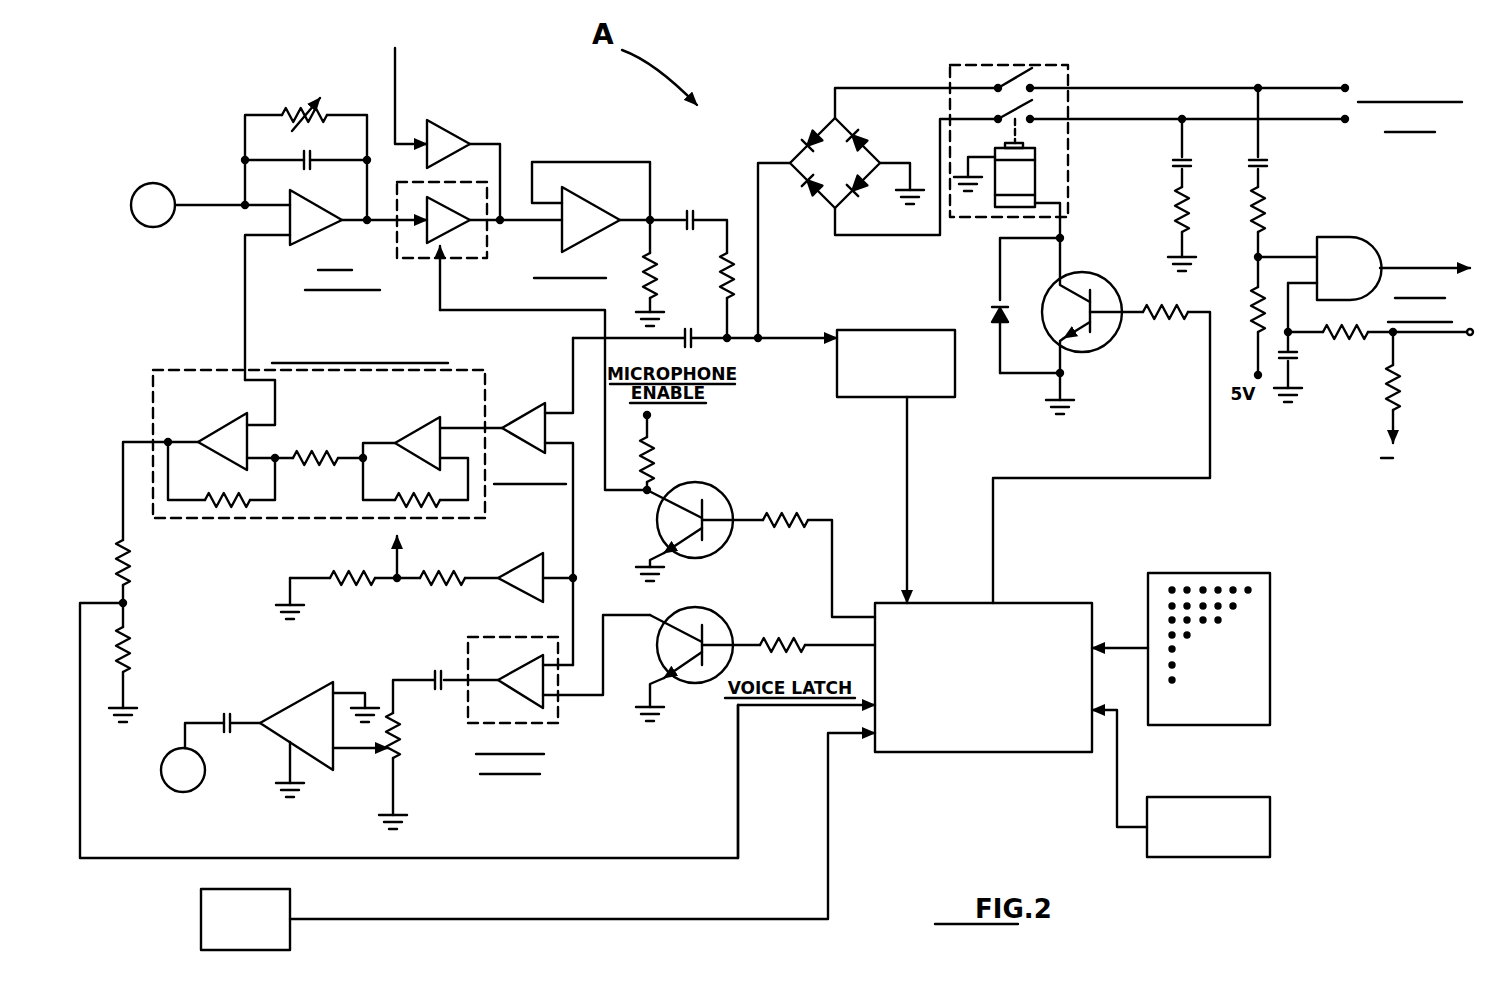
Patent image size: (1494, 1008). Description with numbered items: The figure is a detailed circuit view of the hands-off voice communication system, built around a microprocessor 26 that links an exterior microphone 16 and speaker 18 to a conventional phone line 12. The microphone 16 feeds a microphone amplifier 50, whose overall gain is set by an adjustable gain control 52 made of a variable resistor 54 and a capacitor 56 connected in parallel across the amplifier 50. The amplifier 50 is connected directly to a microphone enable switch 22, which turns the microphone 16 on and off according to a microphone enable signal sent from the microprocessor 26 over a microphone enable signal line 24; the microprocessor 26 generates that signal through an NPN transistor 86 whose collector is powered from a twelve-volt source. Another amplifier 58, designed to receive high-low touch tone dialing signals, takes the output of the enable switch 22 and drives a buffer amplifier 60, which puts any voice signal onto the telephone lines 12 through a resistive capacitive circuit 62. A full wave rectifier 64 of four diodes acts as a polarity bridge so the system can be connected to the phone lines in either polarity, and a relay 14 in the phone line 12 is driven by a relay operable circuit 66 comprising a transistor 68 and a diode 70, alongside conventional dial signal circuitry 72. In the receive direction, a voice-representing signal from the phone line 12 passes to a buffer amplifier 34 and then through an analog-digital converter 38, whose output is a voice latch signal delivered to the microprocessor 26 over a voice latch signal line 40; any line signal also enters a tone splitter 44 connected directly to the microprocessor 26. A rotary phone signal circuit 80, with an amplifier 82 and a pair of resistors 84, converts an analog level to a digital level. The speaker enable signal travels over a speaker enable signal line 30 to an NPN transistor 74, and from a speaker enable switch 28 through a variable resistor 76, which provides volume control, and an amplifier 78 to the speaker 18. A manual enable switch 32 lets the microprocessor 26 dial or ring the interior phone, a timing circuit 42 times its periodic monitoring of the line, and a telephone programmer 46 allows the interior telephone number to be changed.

The phone line 12 is at (1150, 118).
The relay 14 is at (1040, 62).
The microphone 16 is at (150, 196).
The speaker 18 is at (192, 775).
The microphone enable switch 22 is at (466, 254).
The microphone enable signal line 24 is at (521, 312).
The microprocessor 26 is at (1034, 612).
The speaker enable switch 28 is at (562, 712).
The speaker enable signal line 30 is at (830, 640).
The enable switch 32 is at (292, 892).
The buffer amplifier 34 is at (533, 415).
The analog-digital converter 38 is at (283, 512).
The voice latch signal line 40 is at (525, 858).
The timing circuit 42 is at (1222, 857).
The tone splitter 44 is at (955, 393).
The telephone programmer 46 is at (1258, 660).
The microphone amplifier 50 is at (304, 240).
The adjustable gain control 52 is at (318, 84).
The variable resistor 54 is at (300, 106).
The capacitor 56 is at (313, 157).
The amplifier 58 is at (451, 124).
The buffer amplifier 60 is at (596, 207).
The resistive capacitive circuit 62 is at (697, 211).
The full wave rectifier 64 is at (828, 114).
The relay operable circuit 66 is at (1108, 270).
The transistor 68 is at (1106, 331).
The diode 70 is at (990, 312).
The dial signal circuitry 72 is at (1354, 228).
The NPN transistor 74 is at (690, 617).
The variable resistor 76 is at (402, 749).
The amplifier 78 is at (312, 699).
The rotary phone signal circuit 80 is at (470, 564).
The amplifier 82 is at (522, 581).
The resistors 84 is at (425, 584).
The NPN transistor 86 is at (720, 503).